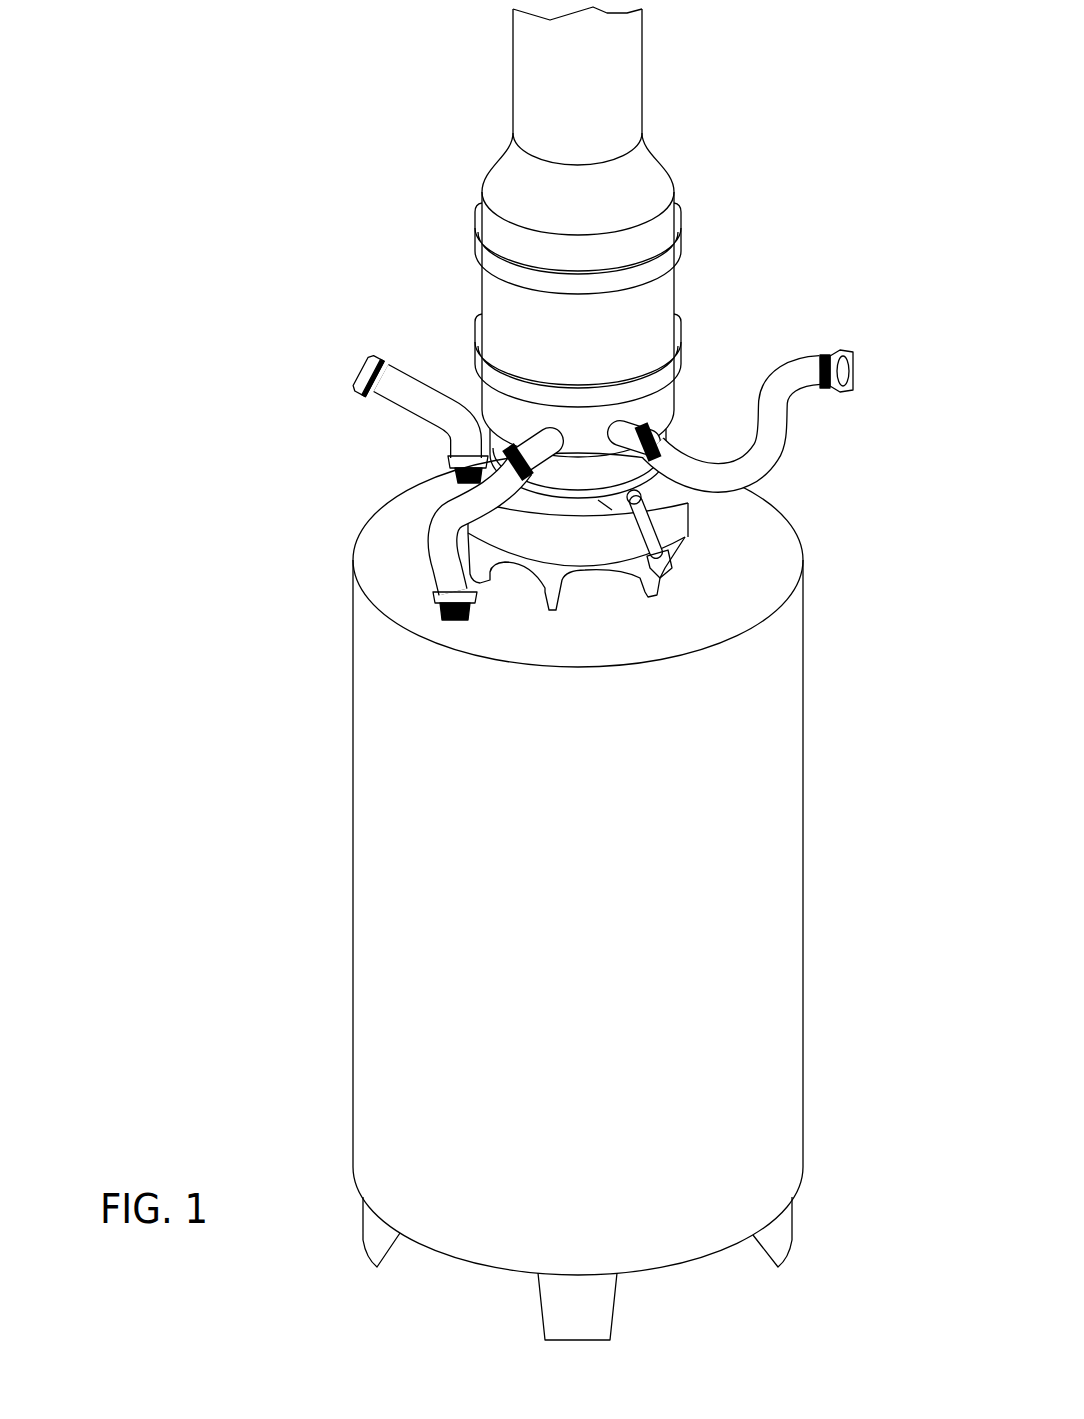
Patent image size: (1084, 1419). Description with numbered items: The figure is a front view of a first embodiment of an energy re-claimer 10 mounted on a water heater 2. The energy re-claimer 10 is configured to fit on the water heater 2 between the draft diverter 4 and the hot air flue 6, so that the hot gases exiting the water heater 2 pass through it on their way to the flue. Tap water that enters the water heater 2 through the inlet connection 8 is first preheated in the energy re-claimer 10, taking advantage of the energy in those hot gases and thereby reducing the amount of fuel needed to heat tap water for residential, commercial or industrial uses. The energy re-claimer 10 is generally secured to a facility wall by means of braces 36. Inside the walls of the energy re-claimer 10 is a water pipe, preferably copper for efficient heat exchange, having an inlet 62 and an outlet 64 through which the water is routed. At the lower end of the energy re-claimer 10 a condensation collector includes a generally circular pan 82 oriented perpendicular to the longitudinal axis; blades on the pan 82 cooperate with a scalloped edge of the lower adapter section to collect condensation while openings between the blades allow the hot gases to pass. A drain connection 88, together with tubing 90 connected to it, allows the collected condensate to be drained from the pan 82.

The water heater 2 is at (793, 838).
The draft diverter 4 is at (662, 512).
The hot air flue 6 is at (623, 72).
The inlet connection 8 is at (437, 600).
The energy re-claimer 10 is at (713, 175).
The braces 36 is at (477, 238).
The inlet 62 is at (657, 440).
The outlet 64 is at (452, 452).
The pan 82 is at (603, 503).
The drain connection 88 is at (655, 505).
The tubing 90 is at (655, 544).